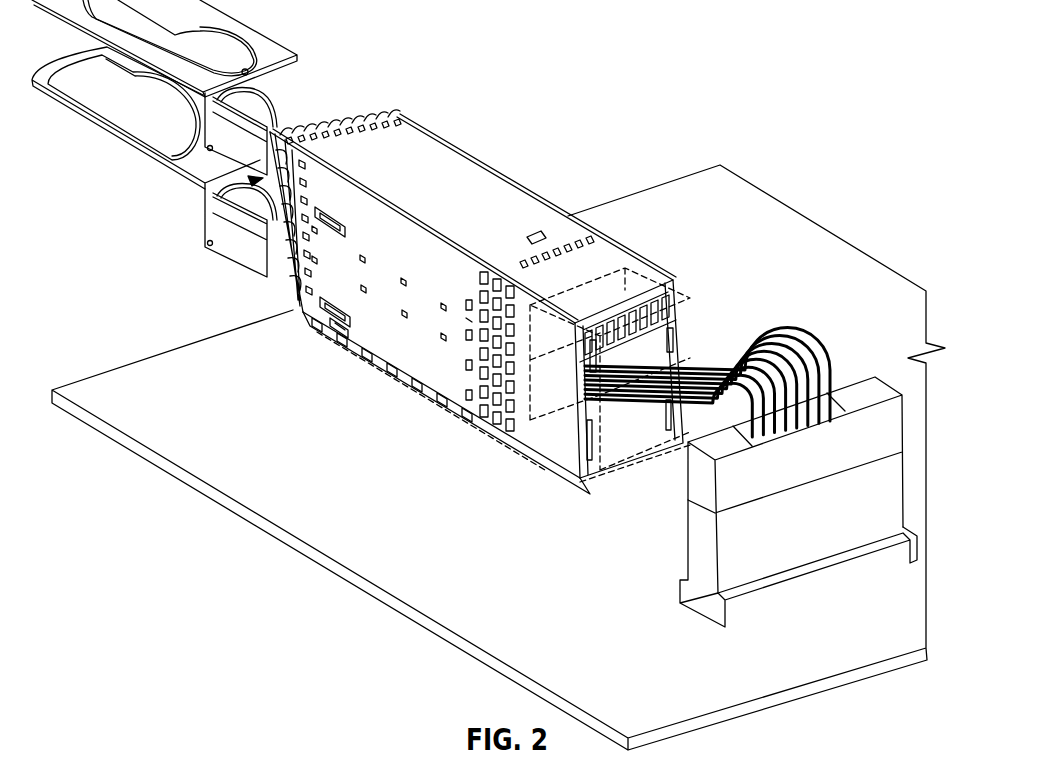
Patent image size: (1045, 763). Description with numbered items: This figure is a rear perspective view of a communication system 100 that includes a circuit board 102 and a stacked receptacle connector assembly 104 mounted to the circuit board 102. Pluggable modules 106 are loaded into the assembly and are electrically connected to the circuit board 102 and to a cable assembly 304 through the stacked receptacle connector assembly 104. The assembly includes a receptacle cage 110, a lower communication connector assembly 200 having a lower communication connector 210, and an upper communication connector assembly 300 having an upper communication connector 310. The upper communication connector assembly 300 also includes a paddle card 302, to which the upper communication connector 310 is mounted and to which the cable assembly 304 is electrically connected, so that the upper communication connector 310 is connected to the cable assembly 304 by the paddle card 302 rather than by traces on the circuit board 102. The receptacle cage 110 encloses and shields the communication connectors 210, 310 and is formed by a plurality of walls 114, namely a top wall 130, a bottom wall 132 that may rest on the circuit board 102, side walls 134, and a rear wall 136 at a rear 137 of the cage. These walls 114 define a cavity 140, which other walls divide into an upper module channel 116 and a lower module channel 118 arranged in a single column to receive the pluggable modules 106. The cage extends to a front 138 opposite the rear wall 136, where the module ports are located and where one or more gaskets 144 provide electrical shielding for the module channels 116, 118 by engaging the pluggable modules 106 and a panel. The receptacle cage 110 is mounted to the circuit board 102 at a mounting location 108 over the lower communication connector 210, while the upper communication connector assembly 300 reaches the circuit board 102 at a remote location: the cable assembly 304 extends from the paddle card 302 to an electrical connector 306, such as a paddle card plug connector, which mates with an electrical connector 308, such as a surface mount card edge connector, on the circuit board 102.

The communication system 100 is at (553, 56).
The circuit board 102 is at (642, 203).
The stacked receptacle connector assembly 104 is at (443, 108).
The pluggable module 106 is at (293, 88).
The mounting location 108 is at (295, 326).
The receptacle cage 110 is at (538, 227).
The walls 114 is at (497, 197).
The upper module channel 116 is at (204, 194).
The lower module channel 118 is at (262, 274).
The top wall 130 is at (457, 173).
The bottom wall 132 is at (375, 362).
The side walls 134 is at (372, 305).
The rear wall 136 is at (598, 458).
The rear 137 is at (623, 455).
The front 138 is at (303, 115).
The cavity 140 is at (608, 328).
The gaskets 144 is at (335, 105).
The lower communication connector assembly 200 is at (522, 445).
The lower communication connector 210 is at (524, 462).
The upper communication connector assembly 300 is at (608, 302).
The paddle card 302 is at (655, 360).
The cable assembly 304 is at (809, 346).
The electrical connector 306 is at (695, 477).
The electrical connector 308 is at (700, 545).
The upper communication connector 310 is at (638, 284).